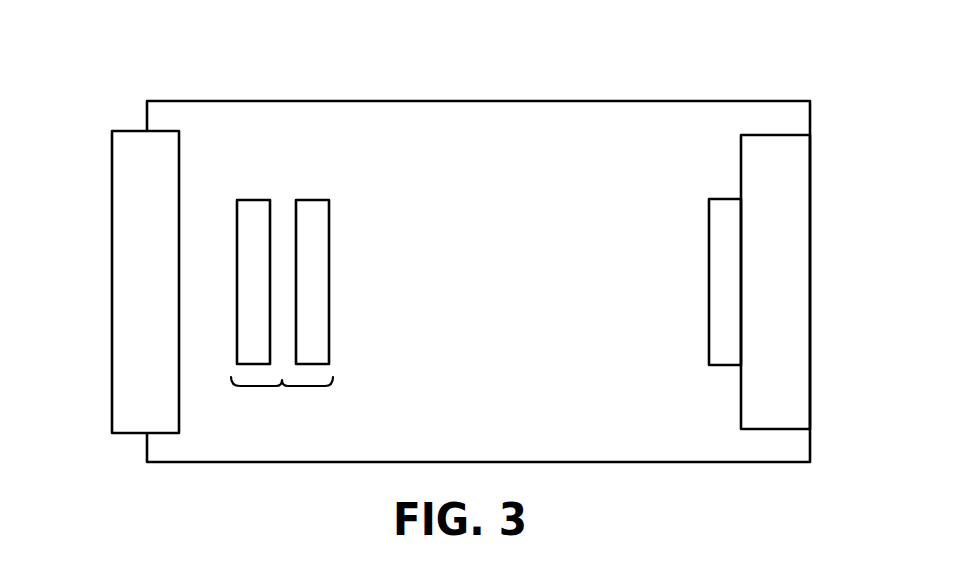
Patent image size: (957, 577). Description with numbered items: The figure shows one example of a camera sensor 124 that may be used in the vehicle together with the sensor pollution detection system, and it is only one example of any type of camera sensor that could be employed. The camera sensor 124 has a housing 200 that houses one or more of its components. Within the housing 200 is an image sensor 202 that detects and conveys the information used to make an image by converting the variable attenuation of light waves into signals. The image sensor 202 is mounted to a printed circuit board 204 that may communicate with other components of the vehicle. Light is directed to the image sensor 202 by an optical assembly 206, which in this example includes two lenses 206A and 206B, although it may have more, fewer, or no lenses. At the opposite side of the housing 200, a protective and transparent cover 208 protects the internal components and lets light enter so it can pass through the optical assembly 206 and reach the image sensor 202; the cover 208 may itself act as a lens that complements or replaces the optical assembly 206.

The camera sensor 124 is at (112, 89).
The housing 200 is at (503, 100).
The image sensor 202 is at (715, 242).
The printed circuit board 204 is at (790, 237).
The optical assembly 206 is at (282, 388).
The lens 206A is at (253, 217).
The lens 206B is at (317, 216).
The protective and transparent cover 208 is at (142, 330).